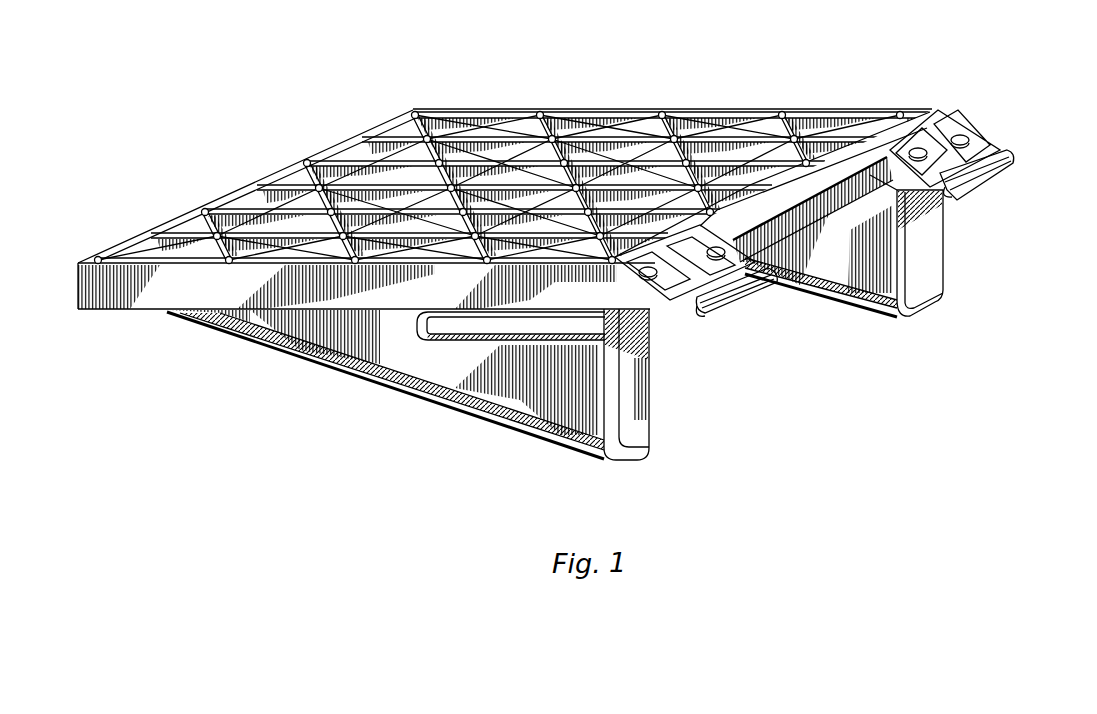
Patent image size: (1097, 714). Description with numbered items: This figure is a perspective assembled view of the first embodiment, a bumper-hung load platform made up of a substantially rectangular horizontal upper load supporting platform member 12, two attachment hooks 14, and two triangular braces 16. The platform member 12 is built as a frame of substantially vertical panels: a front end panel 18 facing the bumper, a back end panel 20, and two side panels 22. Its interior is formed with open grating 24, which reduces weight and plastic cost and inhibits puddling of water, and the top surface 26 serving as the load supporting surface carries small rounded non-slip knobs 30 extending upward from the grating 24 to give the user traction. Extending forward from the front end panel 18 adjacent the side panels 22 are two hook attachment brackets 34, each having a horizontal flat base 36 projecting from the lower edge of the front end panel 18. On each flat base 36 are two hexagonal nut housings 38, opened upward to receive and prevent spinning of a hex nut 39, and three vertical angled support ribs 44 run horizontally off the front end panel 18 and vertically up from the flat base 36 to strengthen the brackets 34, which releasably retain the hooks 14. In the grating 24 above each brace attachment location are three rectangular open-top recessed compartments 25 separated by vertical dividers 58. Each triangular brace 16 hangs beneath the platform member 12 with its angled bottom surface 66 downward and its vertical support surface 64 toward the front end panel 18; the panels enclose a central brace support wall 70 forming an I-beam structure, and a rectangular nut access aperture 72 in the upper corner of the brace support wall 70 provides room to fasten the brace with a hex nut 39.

The upper load supporting platform member 12 is at (290, 172).
The attachment hook 14 is at (983, 177).
The triangular brace 16 is at (503, 383).
The front end panel 18 is at (880, 123).
The back end panel 20 is at (133, 238).
The side panel 22 is at (621, 110).
The open grating 24 is at (517, 130).
The recessed compartment 25 is at (807, 117).
The top surface 26 is at (665, 113).
The non-slip knob 30 is at (541, 113).
The hook attachment bracket 34 is at (957, 123).
The flat base 36 is at (927, 163).
The nut housing 38 is at (921, 140).
The hex nut 39 is at (943, 213).
The angled support rib 44 is at (967, 128).
The divider 58 is at (537, 253).
The vertical support surface 64 is at (650, 377).
The angled bottom surface 66 is at (397, 395).
The brace support wall 70 is at (525, 385).
The nut access aperture 72 is at (458, 322).